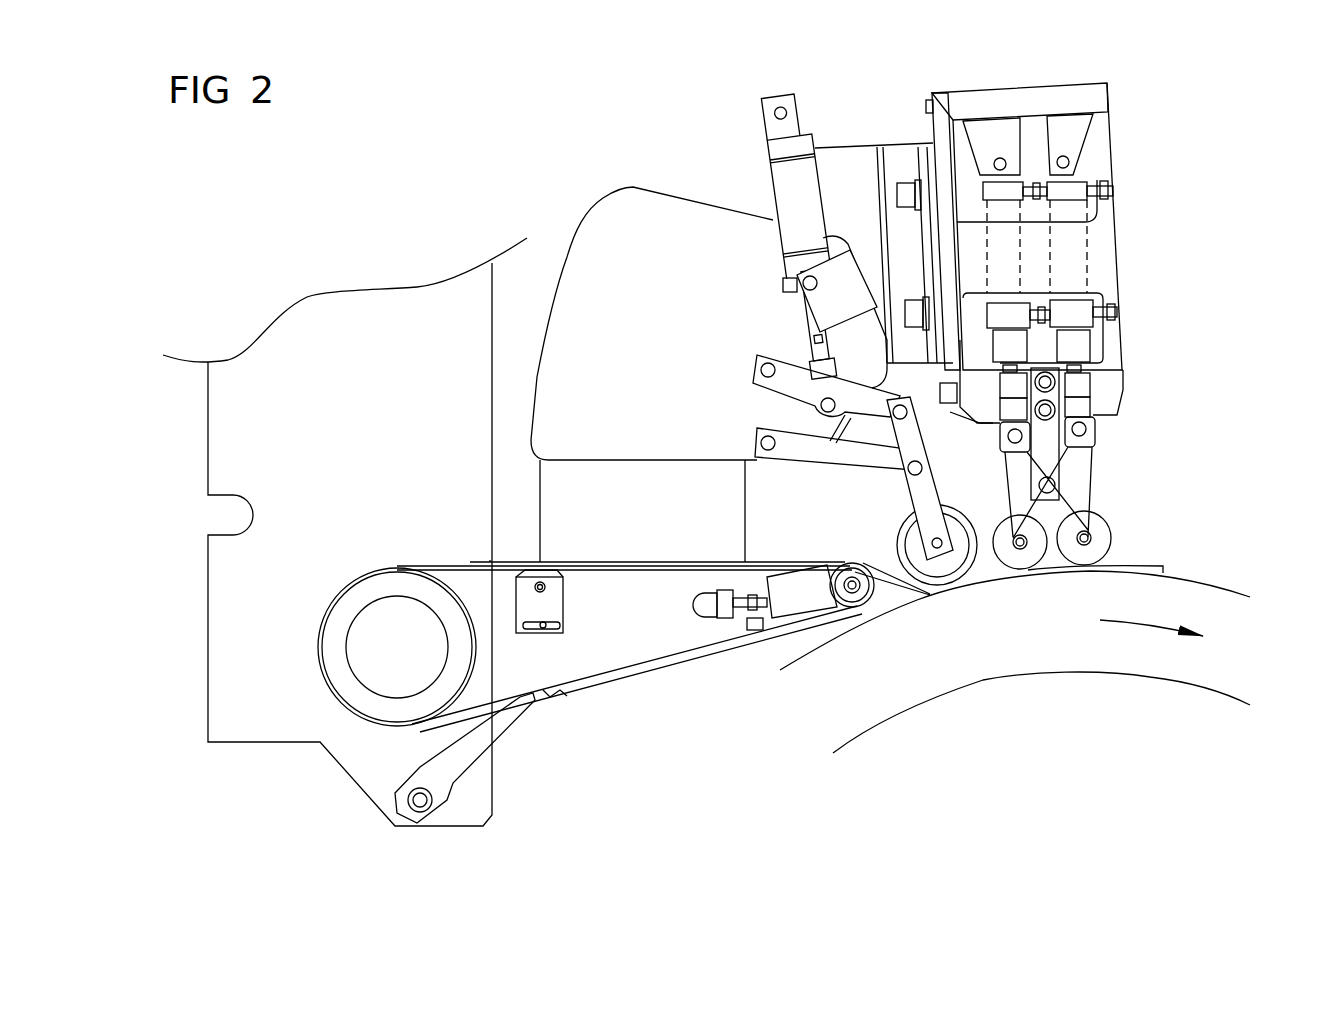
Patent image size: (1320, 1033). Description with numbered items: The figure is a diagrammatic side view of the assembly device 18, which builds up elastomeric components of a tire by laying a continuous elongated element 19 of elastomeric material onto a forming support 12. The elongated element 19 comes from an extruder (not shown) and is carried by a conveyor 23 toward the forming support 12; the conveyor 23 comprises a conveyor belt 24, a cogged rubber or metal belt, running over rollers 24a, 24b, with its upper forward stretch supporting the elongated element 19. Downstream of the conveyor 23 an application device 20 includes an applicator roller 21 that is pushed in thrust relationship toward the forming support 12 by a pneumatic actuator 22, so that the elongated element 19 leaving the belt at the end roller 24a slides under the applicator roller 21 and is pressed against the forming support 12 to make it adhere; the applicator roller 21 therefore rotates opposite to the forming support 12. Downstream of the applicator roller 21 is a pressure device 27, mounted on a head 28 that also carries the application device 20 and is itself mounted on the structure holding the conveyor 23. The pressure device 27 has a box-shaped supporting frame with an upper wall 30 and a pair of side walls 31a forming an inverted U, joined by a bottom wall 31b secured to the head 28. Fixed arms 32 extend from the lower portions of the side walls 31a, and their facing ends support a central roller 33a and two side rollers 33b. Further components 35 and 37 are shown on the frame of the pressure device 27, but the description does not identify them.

The forming support 12 is at (1232, 590).
The assembly device 18 is at (455, 208).
The continuous elongated element 19 is at (503, 560).
The application device 20 is at (955, 478).
The applicator roller 21 is at (980, 567).
The pneumatic actuator 22 is at (790, 181).
The conveyor 23 is at (648, 680).
The conveyor belt 24 is at (600, 677).
The end roller 24a is at (845, 598).
The roller 24b is at (362, 700).
The pressure device 27 is at (1135, 290).
The head 28 is at (824, 102).
The upper wall 30 is at (1073, 95).
The side walls 31a is at (1105, 235).
The bottom wall 31b is at (942, 135).
The fixed arms 32 is at (1048, 444).
The central roller 33a is at (1047, 567).
The side rollers 33b is at (1110, 507).
The lower cylinders 35 is at (1107, 338).
The upper cylinders 37 is at (1030, 208).